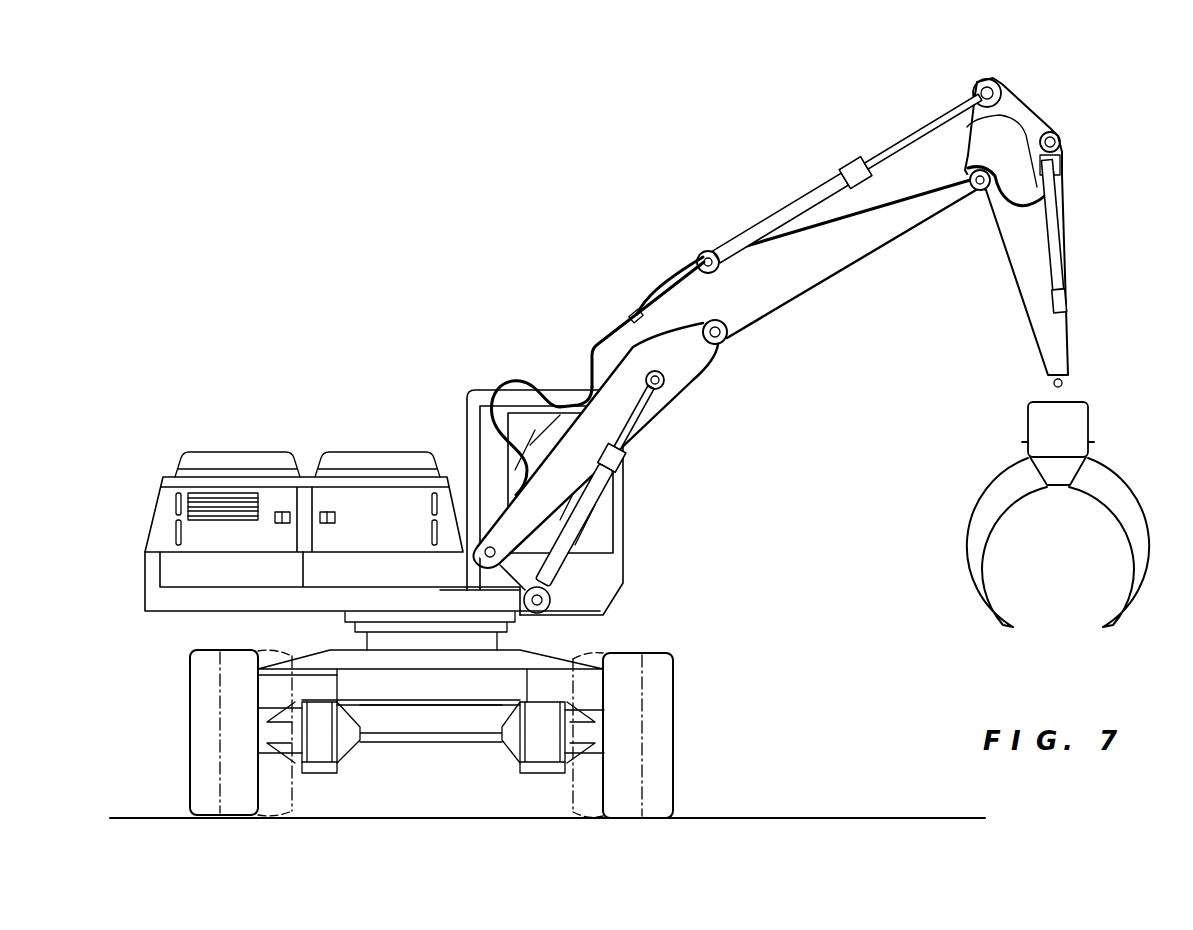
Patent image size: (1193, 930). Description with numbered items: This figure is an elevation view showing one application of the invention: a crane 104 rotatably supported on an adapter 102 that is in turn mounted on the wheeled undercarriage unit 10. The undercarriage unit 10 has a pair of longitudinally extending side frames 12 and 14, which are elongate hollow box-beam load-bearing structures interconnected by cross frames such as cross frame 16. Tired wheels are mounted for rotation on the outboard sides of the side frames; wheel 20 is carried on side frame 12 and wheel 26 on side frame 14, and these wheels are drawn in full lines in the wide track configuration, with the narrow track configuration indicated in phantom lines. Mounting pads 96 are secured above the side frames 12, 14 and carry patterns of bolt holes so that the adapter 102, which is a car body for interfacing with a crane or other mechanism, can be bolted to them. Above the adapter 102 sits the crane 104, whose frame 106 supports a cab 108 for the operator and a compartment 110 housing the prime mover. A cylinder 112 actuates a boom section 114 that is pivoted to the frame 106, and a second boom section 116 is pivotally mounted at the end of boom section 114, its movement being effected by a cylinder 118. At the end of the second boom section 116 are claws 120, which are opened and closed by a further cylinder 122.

The undercarriage unit 10 is at (431, 731).
The side frame 12 is at (316, 752).
The side frame 14 is at (545, 748).
The cross frame 16 is at (425, 722).
The wheel 20 is at (205, 748).
The wheel 26 is at (660, 737).
The mounting pad 96 is at (337, 672).
The adapter 102 is at (520, 662).
The crane 104 is at (434, 458).
The frame 106 is at (210, 604).
The cab 108 is at (608, 572).
The compartment 110 is at (385, 497).
The cylinder 112 is at (597, 490).
The boom section 114 is at (805, 268).
The second boom section 116 is at (1013, 255).
The cylinder 118 is at (810, 190).
The claws 120 is at (1120, 498).
The cylinder 122 is at (1058, 222).